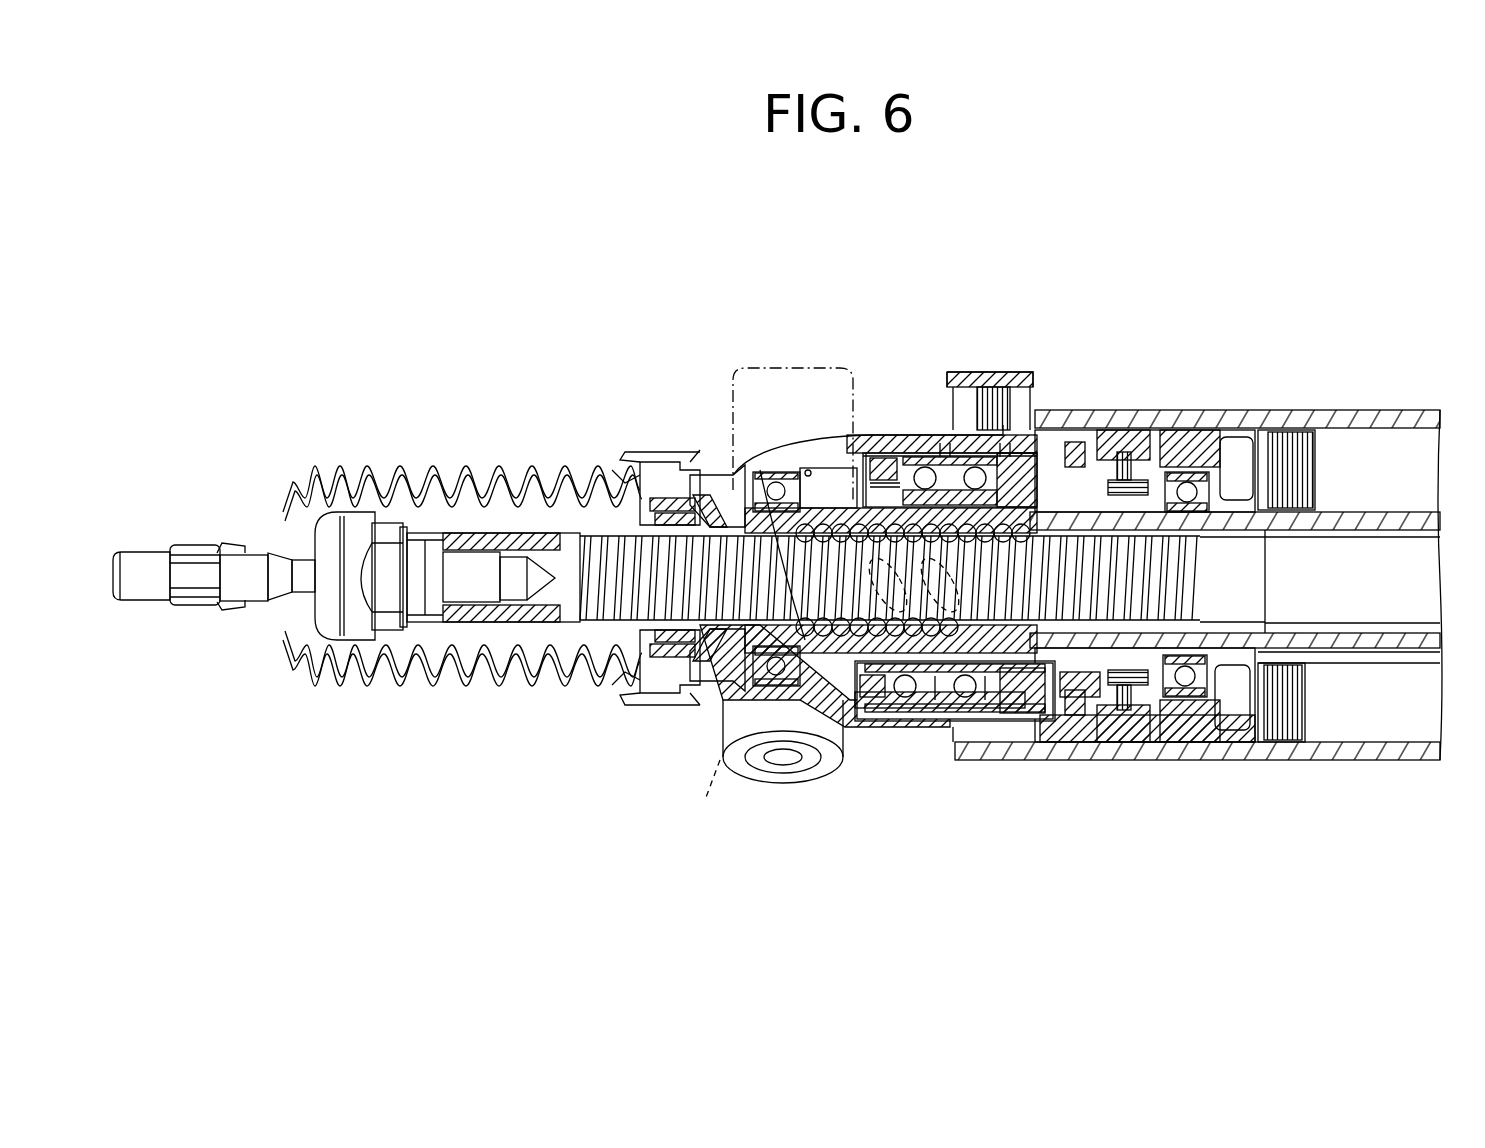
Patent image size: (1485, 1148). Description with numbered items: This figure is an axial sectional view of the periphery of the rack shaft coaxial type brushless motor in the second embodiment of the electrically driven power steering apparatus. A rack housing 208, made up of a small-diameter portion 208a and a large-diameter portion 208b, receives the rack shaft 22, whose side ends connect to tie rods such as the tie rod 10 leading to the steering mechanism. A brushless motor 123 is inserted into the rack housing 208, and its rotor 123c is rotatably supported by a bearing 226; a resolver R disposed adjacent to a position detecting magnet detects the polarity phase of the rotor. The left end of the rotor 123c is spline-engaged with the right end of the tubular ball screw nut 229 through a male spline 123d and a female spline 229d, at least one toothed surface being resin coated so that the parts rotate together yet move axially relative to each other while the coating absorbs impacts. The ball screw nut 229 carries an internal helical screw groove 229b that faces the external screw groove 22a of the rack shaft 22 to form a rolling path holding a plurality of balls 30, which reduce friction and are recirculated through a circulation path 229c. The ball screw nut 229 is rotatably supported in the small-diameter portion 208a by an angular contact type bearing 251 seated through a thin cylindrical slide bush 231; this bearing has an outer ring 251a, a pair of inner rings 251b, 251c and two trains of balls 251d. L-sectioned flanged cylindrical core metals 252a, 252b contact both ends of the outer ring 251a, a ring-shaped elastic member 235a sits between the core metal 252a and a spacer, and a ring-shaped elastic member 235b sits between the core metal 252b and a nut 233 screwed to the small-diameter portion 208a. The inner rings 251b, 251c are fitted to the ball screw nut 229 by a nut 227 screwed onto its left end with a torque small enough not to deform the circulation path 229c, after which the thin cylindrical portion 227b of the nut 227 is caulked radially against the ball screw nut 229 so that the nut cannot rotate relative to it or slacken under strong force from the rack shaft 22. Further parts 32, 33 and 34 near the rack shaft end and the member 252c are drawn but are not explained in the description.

The tie rod 10 is at (140, 558).
The rack shaft 22 is at (1342, 598).
The external screw groove 22a is at (630, 690).
The balls 30 is at (850, 590).
The boot 32 is at (432, 462).
The seal 33 is at (688, 470).
The boot clamp 34 is at (643, 522).
The brushless motor 123 is at (1245, 430).
The rotor 123c is at (1320, 510).
The male spline 123d is at (1055, 720).
The rack housing 208 is at (1195, 280).
The small-diameter portion 208a is at (866, 445).
The large-diameter portion 208b is at (1137, 450).
The bearing 226 is at (1195, 700).
The nut 227 is at (848, 655).
The thin cylindrical portion 227b is at (830, 660).
The ball screw nut 229 is at (787, 430).
The internal helical screw groove 229b is at (805, 640).
The circulation path 229c is at (810, 470).
The female spline 229d is at (1085, 700).
The slide bush 231 is at (930, 703).
The nut 233 is at (1070, 430).
The ring-shaped elastic member 235a is at (905, 465).
The ring-shaped elastic member 235b is at (1010, 470).
The angular contact type bearing 251 is at (905, 715).
The outer ring 251a is at (953, 695).
The inner ring 251b is at (918, 690).
The inner ring 251c is at (967, 705).
The balls 251d is at (937, 690).
The flanged cylindrical core metal 252a is at (945, 443).
The flanged cylindrical core metal 252b is at (1050, 443).
The third support member 252c is at (870, 452).
The resolver R is at (1140, 460).